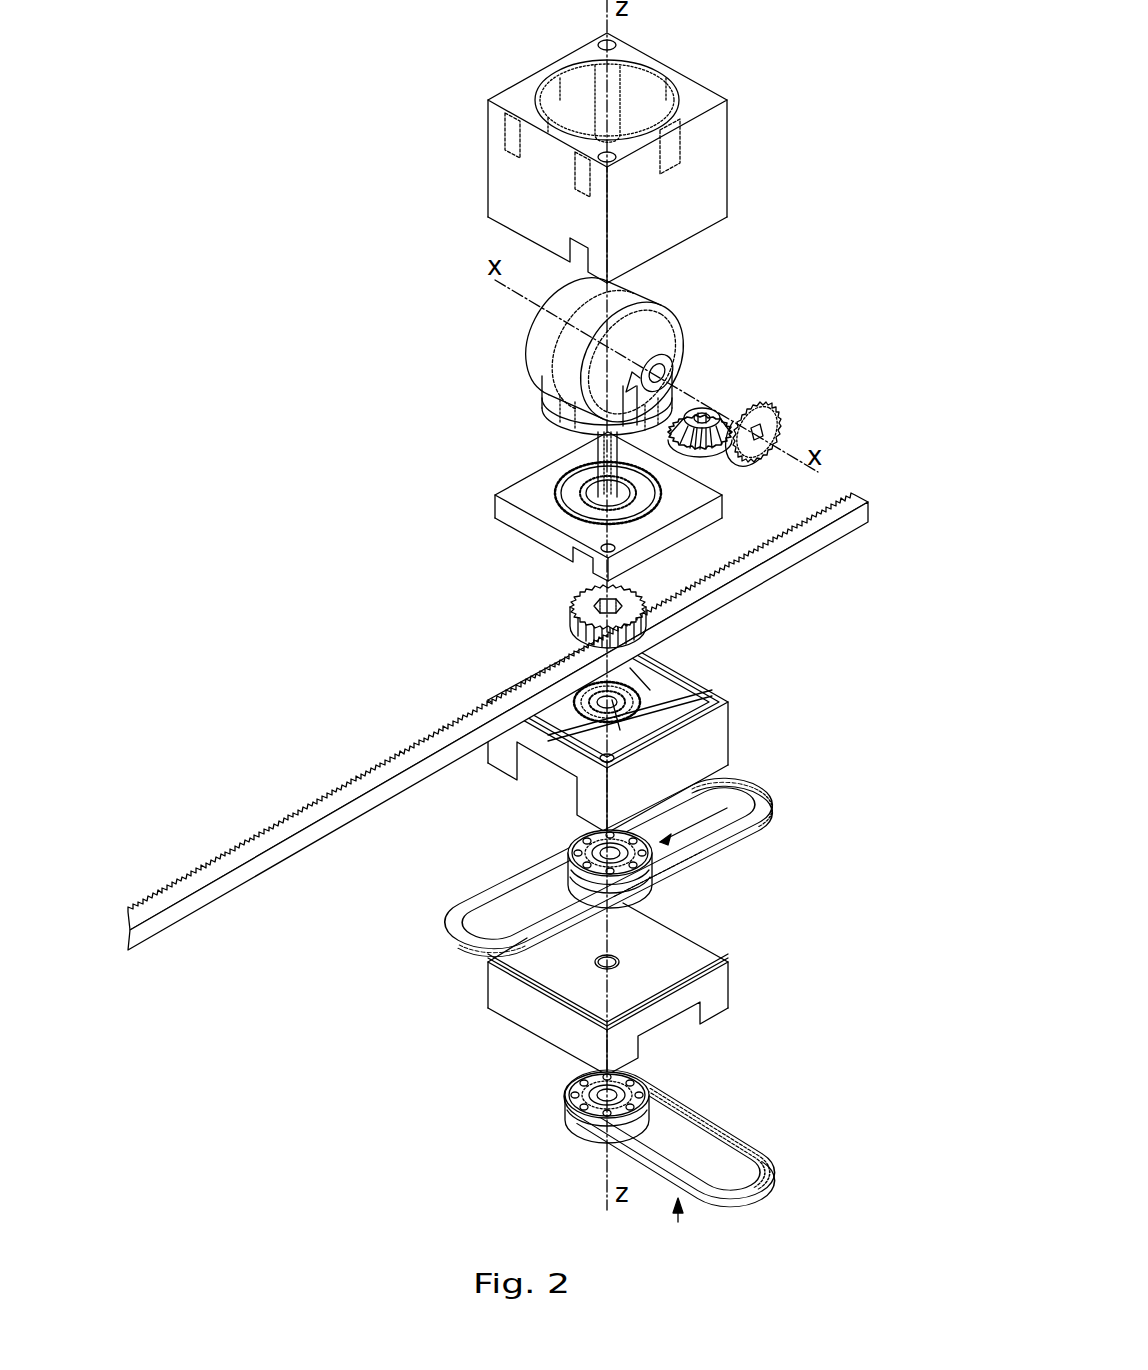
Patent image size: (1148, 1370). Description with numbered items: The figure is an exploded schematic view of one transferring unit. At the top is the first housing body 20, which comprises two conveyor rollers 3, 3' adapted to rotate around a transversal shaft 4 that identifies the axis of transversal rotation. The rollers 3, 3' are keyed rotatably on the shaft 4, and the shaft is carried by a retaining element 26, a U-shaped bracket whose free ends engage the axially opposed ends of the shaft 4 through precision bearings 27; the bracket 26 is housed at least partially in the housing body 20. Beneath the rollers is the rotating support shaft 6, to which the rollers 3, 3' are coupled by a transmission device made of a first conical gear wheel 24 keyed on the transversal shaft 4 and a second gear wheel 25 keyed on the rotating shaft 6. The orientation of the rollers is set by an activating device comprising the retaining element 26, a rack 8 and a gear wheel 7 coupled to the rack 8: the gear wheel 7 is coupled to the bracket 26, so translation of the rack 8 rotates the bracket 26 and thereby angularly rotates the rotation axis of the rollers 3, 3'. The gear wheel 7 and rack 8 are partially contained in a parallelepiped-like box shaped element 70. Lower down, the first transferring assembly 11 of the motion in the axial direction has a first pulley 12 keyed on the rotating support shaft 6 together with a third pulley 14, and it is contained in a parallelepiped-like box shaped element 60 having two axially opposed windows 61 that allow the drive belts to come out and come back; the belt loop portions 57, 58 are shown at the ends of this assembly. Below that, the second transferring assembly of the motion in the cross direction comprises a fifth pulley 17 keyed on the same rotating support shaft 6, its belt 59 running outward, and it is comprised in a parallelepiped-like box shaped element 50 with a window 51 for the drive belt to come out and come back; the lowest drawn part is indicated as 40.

The first housing body 20 is at (732, 160).
The conveyor roller 3 is at (671, 355).
The conveyor roller 3' is at (518, 336).
The precision bearing 27 is at (652, 328).
The transversal shaft 4 is at (665, 387).
The retaining element 26 is at (560, 393).
The rotating support shaft 6 is at (597, 445).
The parallelepiped-like box shaped element 70 is at (493, 505).
The gear wheel 7 is at (577, 598).
The rack 8 is at (386, 760).
The second gear wheel 25 is at (705, 442).
The first conical gear wheel 24 is at (778, 421).
The parallelepiped-like box shaped element 60 is at (730, 730).
The window 61 is at (578, 792).
The first transferring assembly of the motion in the axial direction 11 is at (742, 804).
The belt end 58 is at (740, 846).
The belt end 57 is at (468, 900).
The third pulley 14 is at (652, 882).
The first pulley 12 is at (578, 843).
The parallelepiped-like box shaped element 50 is at (735, 985).
The window 51 is at (702, 1012).
The lower belt 59 is at (738, 1136).
The fifth pulley 17 is at (637, 1130).
The base 40 is at (682, 1215).